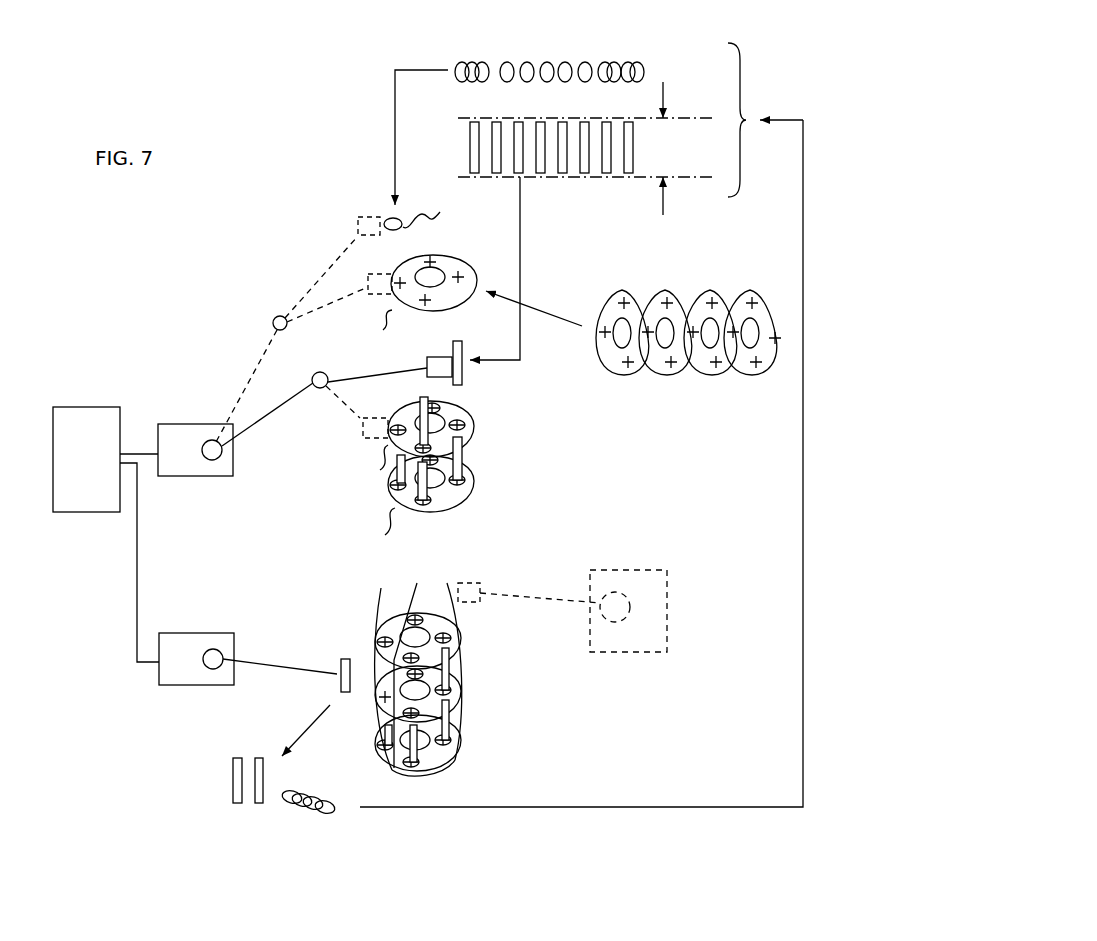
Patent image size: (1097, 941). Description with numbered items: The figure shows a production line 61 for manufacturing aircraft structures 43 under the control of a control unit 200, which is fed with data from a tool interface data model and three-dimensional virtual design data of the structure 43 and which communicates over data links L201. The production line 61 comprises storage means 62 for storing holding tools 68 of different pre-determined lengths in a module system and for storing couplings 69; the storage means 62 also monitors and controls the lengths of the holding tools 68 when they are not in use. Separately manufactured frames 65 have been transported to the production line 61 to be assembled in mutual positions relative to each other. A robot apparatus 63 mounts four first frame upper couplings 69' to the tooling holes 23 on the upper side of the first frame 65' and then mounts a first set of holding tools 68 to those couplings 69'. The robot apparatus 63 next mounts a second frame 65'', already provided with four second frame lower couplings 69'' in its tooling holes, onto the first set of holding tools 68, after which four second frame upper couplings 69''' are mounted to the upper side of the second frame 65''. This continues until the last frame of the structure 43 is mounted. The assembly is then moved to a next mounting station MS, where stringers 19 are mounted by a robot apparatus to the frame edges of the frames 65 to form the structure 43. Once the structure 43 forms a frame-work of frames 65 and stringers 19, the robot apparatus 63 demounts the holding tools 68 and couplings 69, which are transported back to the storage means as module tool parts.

The couplings 69 is at (484, 434).
The holding tools 68 is at (445, 141).
The storage means 62 is at (580, 200).
The production line 61 is at (287, 240).
The tooling holes 23 is at (481, 276).
The first frame 65' is at (408, 434).
The frames 65 is at (688, 364).
The second frame 65'' is at (404, 447).
The second frame upper couplings 69''' is at (366, 411).
The second frame lower couplings 69'' is at (491, 453).
The first frame upper couplings 69' is at (456, 493).
The control unit 200 is at (88, 405).
The robot apparatus 63 is at (203, 412).
The data links L201 is at (199, 564).
The stringers 19 is at (386, 590).
The mounting station MS is at (528, 709).
The aircraft structure 43 is at (480, 742).